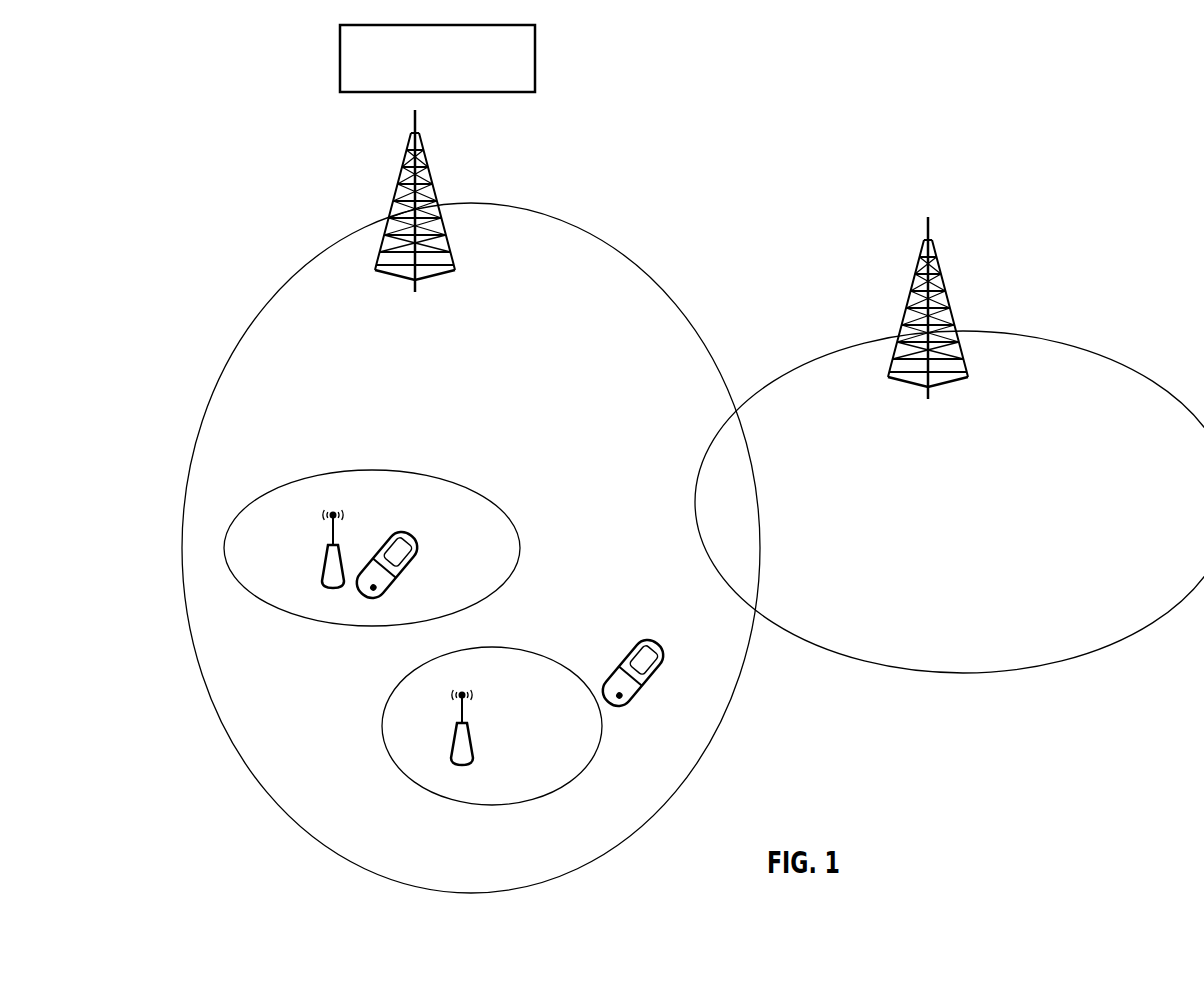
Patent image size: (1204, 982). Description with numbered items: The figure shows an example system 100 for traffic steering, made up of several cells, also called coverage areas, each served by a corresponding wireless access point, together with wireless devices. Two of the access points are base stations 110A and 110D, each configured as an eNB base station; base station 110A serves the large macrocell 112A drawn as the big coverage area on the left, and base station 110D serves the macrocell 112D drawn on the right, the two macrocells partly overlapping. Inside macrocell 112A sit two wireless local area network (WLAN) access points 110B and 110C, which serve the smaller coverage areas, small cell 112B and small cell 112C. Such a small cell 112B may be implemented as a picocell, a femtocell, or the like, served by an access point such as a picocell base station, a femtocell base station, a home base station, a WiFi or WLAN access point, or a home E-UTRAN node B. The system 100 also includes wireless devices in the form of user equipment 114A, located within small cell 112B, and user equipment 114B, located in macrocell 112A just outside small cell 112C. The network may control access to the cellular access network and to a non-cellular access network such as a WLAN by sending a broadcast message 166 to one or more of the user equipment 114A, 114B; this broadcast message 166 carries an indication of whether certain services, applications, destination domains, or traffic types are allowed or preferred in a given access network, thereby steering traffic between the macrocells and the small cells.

The system 100 is at (693, 459).
The broadcast message 166 is at (437, 58).
The base station 110A is at (411, 138).
The wireless local area network access point 110B is at (323, 572).
The wireless local area network access point 110C is at (474, 732).
The base station 110D is at (937, 282).
The macrocell 112A is at (547, 222).
The small cell 112B is at (250, 602).
The small cell 112C is at (568, 784).
The macrocell 112D is at (950, 672).
The user equipment 114A is at (412, 546).
The user equipment 114B is at (657, 652).